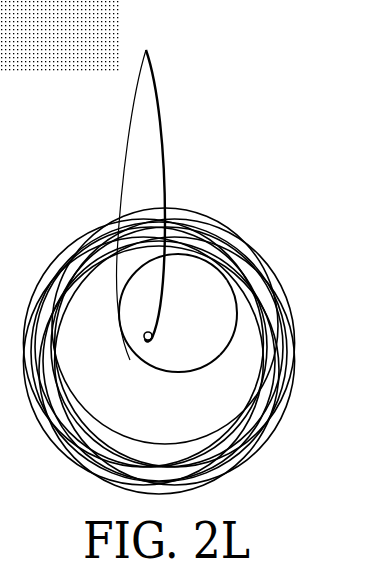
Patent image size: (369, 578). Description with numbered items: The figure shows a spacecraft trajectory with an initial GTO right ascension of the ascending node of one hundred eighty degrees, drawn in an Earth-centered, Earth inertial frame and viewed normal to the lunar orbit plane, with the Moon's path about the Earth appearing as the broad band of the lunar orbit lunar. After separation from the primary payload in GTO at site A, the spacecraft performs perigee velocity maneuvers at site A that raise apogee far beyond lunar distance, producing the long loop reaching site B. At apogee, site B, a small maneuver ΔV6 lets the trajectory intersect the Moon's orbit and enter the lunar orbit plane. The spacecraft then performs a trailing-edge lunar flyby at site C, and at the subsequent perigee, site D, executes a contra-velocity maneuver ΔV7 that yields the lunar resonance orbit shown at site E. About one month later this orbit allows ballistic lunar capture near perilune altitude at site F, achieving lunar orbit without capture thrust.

The site A is at (149, 344).
The site B is at (151, 180).
The site C is at (121, 205).
The site D is at (165, 352).
The site E is at (218, 317).
The site F is at (179, 283).
The lunar orbit lunar is at (158, 351).